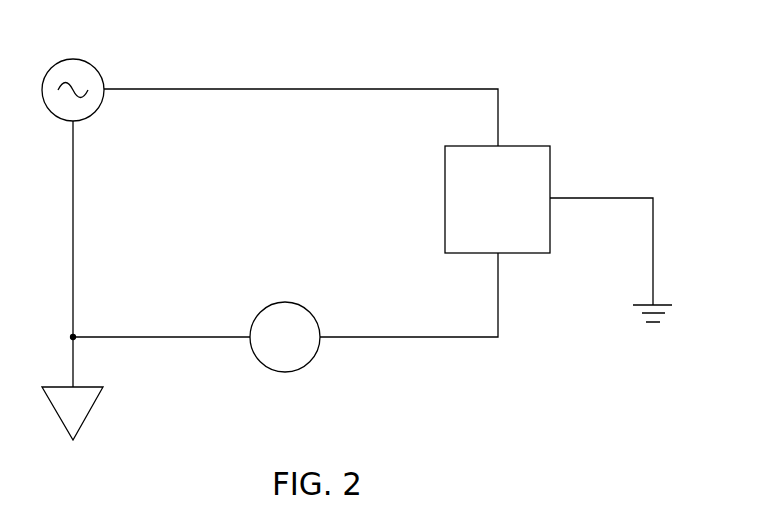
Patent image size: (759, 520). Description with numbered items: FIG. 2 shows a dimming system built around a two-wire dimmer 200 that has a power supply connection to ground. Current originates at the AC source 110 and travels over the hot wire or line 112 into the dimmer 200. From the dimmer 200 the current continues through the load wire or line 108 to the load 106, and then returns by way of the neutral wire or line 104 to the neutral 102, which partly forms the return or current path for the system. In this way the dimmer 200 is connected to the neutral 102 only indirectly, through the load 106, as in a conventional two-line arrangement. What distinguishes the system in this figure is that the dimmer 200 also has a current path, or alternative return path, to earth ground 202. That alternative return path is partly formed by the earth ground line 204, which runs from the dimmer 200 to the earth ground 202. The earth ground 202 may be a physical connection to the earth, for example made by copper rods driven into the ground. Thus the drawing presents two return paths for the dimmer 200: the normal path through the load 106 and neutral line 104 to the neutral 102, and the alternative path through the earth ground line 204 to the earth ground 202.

The neutral 102 is at (88, 414).
The neutral line 104 is at (105, 337).
The load 106 is at (287, 302).
The load line 108 is at (498, 312).
The AC source 110 is at (73, 59).
The hot line 112 is at (387, 89).
The two-wire dimmer 200 is at (518, 146).
The earth ground 202 is at (642, 345).
The earth ground line 204 is at (625, 198).